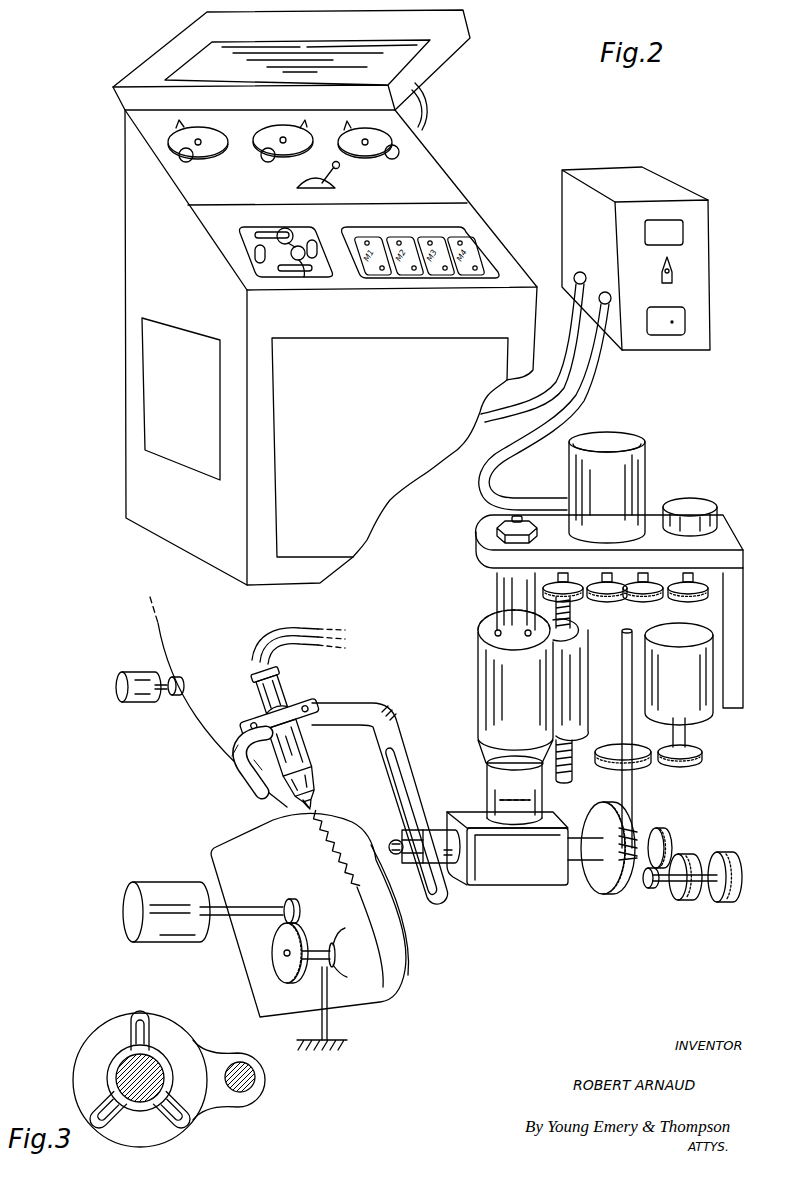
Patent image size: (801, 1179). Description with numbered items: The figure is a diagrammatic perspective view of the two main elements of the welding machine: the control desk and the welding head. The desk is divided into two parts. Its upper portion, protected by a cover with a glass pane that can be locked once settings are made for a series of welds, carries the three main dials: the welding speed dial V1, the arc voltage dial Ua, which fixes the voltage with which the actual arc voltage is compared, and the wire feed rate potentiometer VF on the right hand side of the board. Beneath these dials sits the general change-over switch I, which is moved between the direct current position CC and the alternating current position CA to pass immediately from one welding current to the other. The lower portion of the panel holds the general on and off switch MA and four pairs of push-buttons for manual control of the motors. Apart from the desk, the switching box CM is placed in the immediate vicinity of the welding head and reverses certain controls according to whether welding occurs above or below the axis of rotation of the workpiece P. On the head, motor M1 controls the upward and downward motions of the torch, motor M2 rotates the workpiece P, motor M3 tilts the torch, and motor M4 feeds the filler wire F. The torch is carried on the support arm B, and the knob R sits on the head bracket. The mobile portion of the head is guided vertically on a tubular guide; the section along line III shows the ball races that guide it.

The welding speed potentiometer dial V1 is at (198, 148).
The arc voltage dial Ua is at (283, 147).
The wire feed rate potentiometer dial VF is at (368, 145).
The change-over switch I is at (330, 187).
The direct current position CC is at (273, 190).
The alternating current position CA is at (356, 192).
The general on and off switch MA is at (243, 240).
The switching box CM is at (735, 252).
The torch vertical motion motor M1 is at (622, 470).
The adjusting knob R is at (697, 511).
The vertical guide section line III is at (478, 648).
The torch tilt motor M3 is at (679, 695).
The filler wire feed motor M4 is at (140, 704).
The torch support arm B is at (407, 763).
The filler wire F is at (273, 800).
The workpiece P is at (393, 983).
The workpiece rotation motor M2 is at (163, 947).